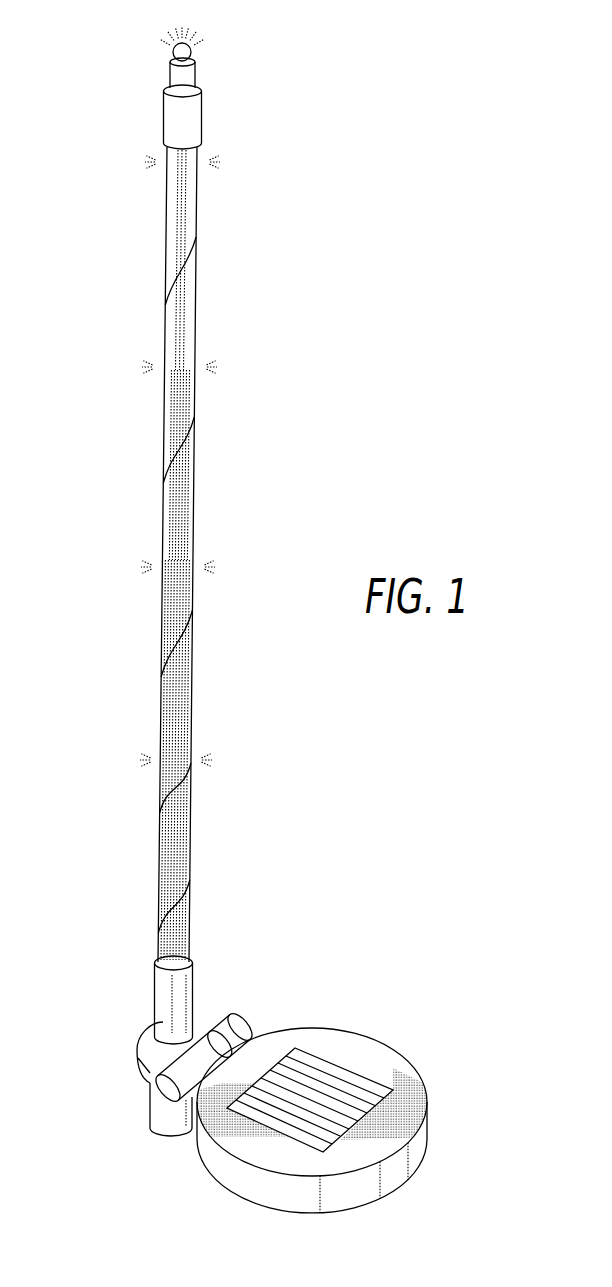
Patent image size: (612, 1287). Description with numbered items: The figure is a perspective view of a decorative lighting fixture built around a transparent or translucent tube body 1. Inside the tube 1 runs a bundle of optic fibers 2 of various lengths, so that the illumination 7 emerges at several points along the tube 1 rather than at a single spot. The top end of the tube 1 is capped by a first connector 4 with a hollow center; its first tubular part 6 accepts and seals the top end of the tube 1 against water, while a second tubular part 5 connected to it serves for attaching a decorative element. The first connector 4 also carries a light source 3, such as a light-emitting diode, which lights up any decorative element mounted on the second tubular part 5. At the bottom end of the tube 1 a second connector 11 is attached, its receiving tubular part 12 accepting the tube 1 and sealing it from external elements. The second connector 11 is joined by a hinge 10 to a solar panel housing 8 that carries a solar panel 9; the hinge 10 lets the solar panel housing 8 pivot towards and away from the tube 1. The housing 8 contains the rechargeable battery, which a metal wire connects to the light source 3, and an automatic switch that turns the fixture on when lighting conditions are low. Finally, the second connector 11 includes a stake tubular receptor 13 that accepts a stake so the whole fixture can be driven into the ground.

The tube body 1 is at (197, 320).
The optic fibers 2 is at (178, 435).
The light source 3 is at (195, 55).
The first connector 4 is at (262, 43).
The second tubular part 5 is at (172, 72).
The first tubular part 6 is at (172, 118).
The illumination 7 is at (208, 557).
The solar panel housing 8 is at (353, 1057).
The solar panel 9 is at (332, 1070).
The hinge 10 is at (242, 1020).
The second connector 11 is at (147, 1002).
The receiving tubular part 12 is at (197, 988).
The stake tubular receptor 13 is at (157, 1117).